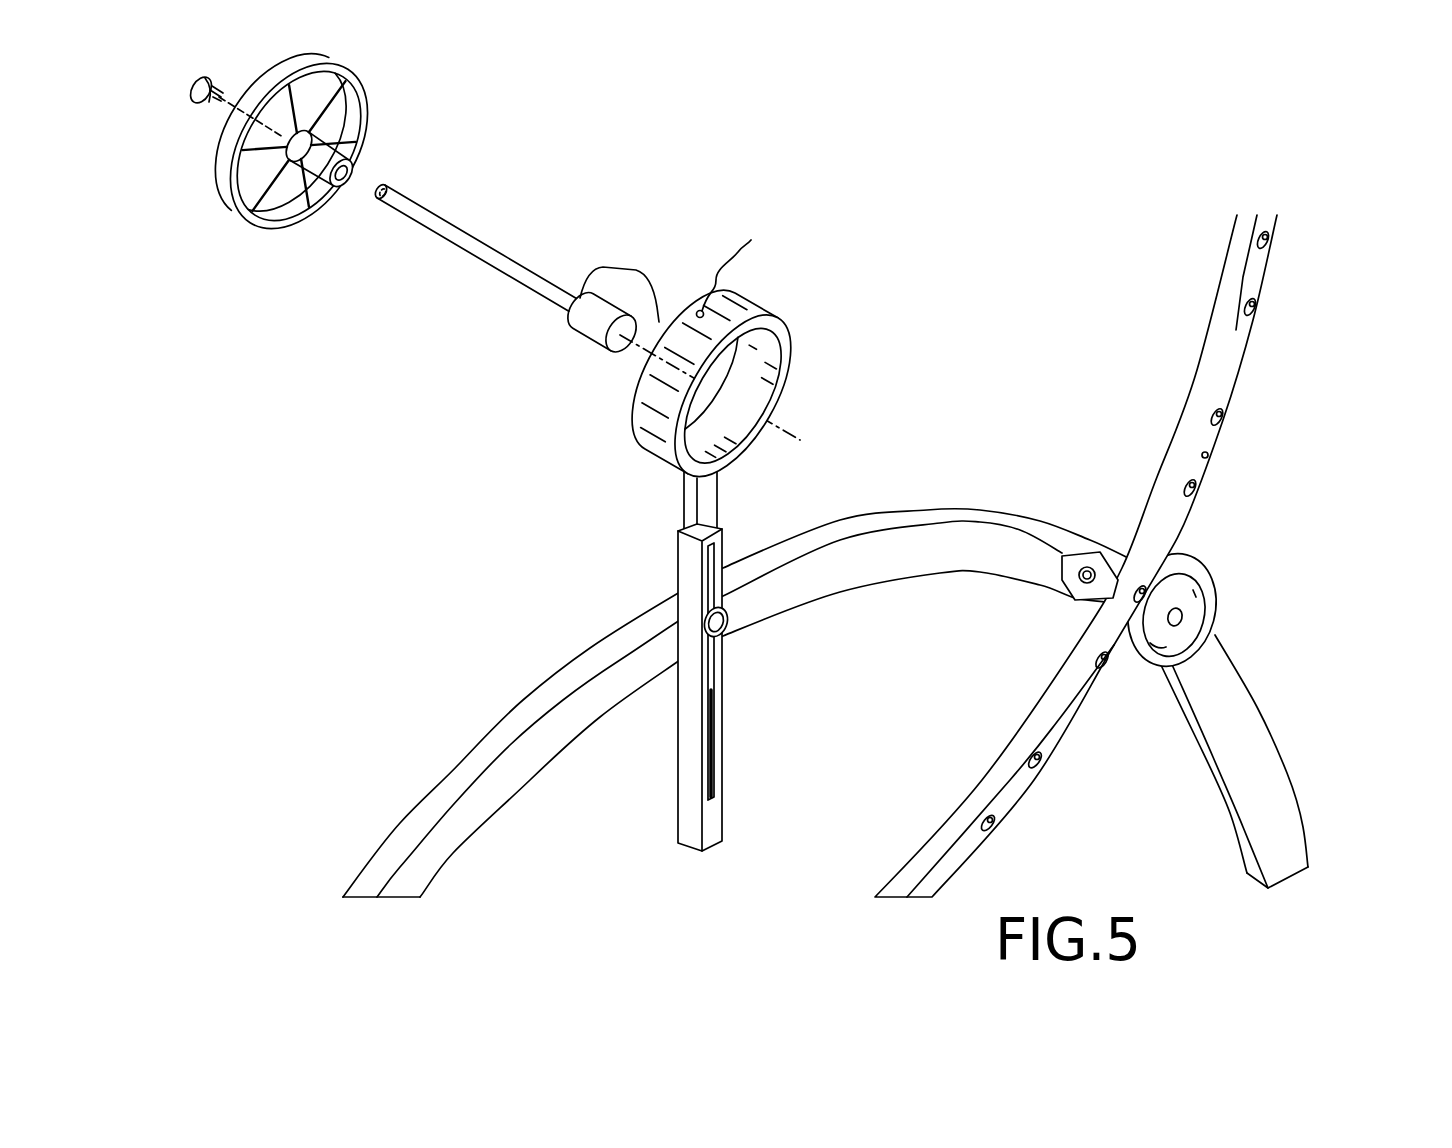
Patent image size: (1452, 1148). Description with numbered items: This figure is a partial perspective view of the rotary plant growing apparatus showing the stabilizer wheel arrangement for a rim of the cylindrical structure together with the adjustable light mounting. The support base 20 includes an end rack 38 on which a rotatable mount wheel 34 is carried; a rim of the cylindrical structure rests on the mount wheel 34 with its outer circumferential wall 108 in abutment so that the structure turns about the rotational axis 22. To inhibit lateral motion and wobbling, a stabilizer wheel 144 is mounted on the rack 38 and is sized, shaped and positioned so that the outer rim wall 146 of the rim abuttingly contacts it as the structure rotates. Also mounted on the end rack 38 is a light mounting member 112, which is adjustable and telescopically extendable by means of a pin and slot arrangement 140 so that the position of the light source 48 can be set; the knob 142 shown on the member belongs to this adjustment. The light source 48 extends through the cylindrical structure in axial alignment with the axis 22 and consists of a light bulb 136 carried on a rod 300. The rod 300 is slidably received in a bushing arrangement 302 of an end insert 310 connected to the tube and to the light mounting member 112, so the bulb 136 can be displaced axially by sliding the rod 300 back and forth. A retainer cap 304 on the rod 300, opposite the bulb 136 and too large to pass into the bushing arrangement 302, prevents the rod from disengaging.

The support base 20 is at (1320, 791).
The rotational axis 22 is at (800, 438).
The mount wheel 34 is at (1196, 569).
The end rack 38 is at (1252, 712).
The light source 48 is at (683, 160).
The outer circumferential wall 108 is at (1091, 720).
The light mounting member 112 is at (718, 822).
The light bulb 136 is at (590, 338).
The pin and slot arrangement 140 is at (759, 679).
The knob 142 is at (726, 622).
The stabilizer wheel 144 is at (1108, 568).
The outer rim wall 146 is at (1183, 369).
The rod 300 is at (511, 258).
The bushing arrangement 302 is at (346, 185).
The retainer cap 304 is at (204, 102).
The end insert 310 is at (364, 113).